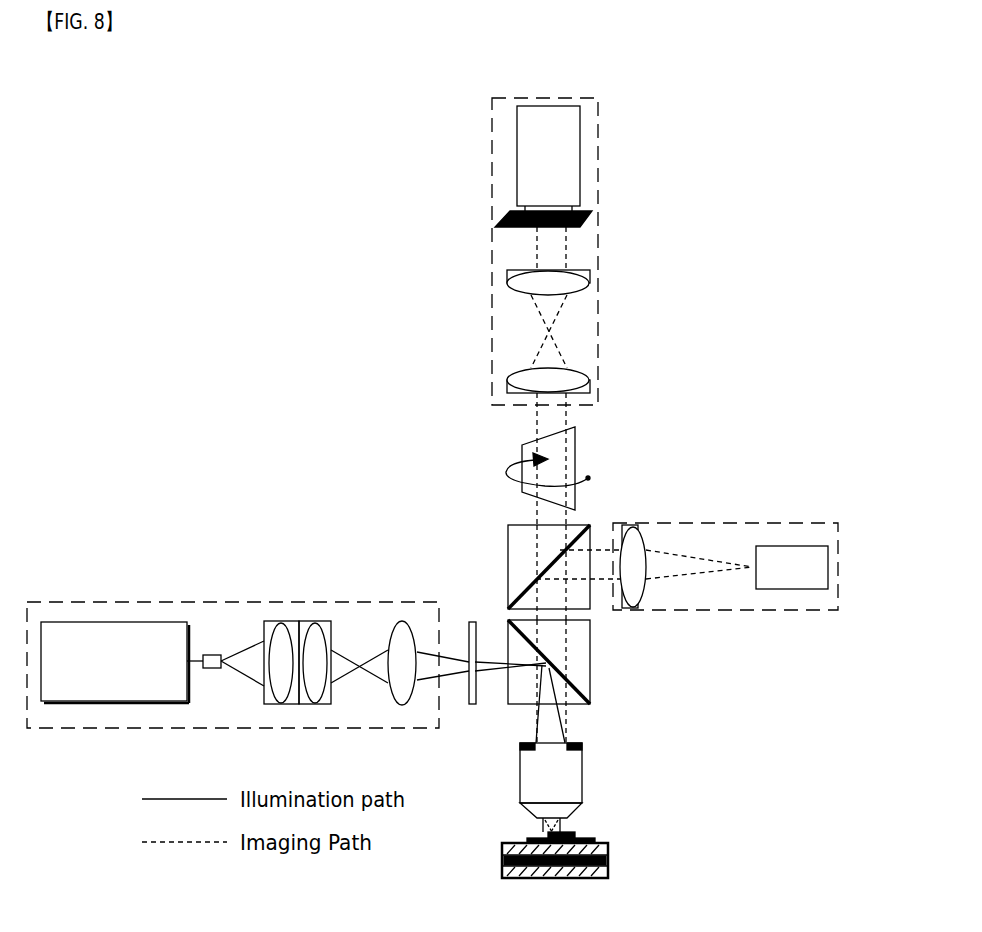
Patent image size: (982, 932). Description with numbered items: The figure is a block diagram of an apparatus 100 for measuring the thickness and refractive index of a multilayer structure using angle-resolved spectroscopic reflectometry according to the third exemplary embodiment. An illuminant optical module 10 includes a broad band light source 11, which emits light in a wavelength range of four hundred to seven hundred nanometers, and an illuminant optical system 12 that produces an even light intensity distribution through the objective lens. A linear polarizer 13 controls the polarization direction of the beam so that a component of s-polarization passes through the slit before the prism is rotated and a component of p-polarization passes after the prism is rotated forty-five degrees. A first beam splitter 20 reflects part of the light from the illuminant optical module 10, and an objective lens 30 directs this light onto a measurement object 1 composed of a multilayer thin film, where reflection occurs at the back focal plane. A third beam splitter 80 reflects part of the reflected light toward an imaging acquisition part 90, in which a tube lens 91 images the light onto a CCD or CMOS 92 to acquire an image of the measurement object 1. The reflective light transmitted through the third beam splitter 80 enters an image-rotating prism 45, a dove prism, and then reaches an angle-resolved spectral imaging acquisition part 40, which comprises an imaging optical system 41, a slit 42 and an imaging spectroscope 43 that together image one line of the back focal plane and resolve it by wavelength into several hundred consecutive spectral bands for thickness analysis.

The measurement object 1 is at (626, 856).
The illuminant optical module 10 is at (112, 600).
The broad band light source 11 is at (116, 702).
The illuminant optical system 12 is at (296, 712).
The linear polarizer 13 is at (472, 705).
The first beam splitter 20 is at (590, 660).
The objective lens 30 is at (582, 788).
The angle-resolved spectral imaging acquisition part 40 is at (490, 277).
The imaging optical system 41 is at (518, 323).
The slit 42 is at (497, 222).
The imaging spectroscope 43 is at (517, 150).
The image-rotating prism 45 is at (523, 457).
The third beam splitter 80 is at (507, 568).
The imaging acquisition part 90 is at (765, 611).
The tube lens 91 is at (640, 590).
The CCD or CMOS 92 is at (828, 566).
The apparatus for measuring thickness and refractive index 100 is at (378, 193).